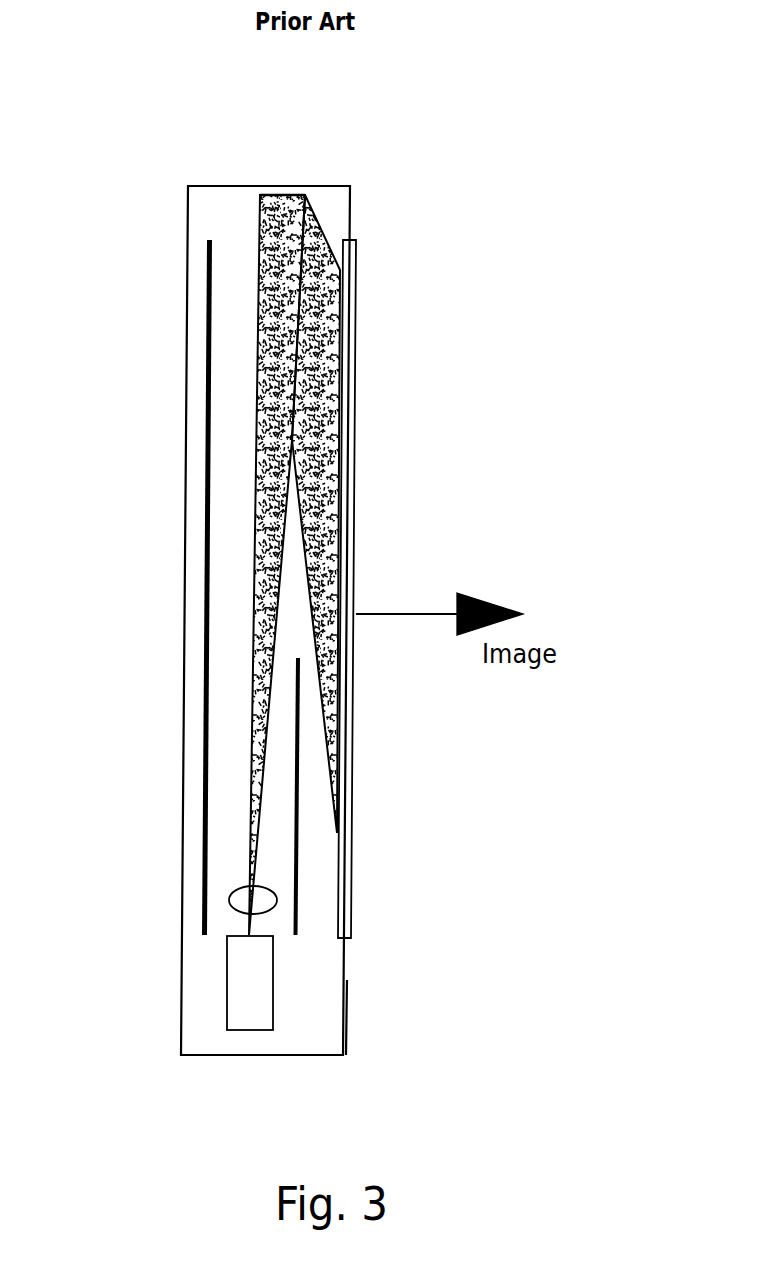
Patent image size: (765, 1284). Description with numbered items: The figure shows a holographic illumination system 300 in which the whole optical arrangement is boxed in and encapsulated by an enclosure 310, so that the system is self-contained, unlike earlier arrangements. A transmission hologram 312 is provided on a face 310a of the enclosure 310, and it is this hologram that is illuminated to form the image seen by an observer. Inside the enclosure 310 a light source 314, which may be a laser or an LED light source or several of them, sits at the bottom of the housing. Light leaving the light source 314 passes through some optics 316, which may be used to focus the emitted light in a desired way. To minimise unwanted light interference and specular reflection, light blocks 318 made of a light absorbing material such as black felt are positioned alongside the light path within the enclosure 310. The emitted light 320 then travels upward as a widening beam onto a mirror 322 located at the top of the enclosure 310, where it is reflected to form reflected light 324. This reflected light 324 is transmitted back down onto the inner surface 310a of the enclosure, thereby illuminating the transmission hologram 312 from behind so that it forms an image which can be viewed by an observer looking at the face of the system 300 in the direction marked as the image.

The holographic illumination system 300 is at (430, 152).
The enclosure 310 is at (188, 250).
The face of the enclosure 310a is at (343, 988).
The transmission hologram 312 is at (355, 506).
The light source 314 is at (255, 1030).
The optics 316 is at (230, 900).
The light blocks 318 is at (296, 770).
The emitted light 320 is at (255, 571).
The mirror 322 is at (277, 187).
The reflected light 324 is at (343, 333).